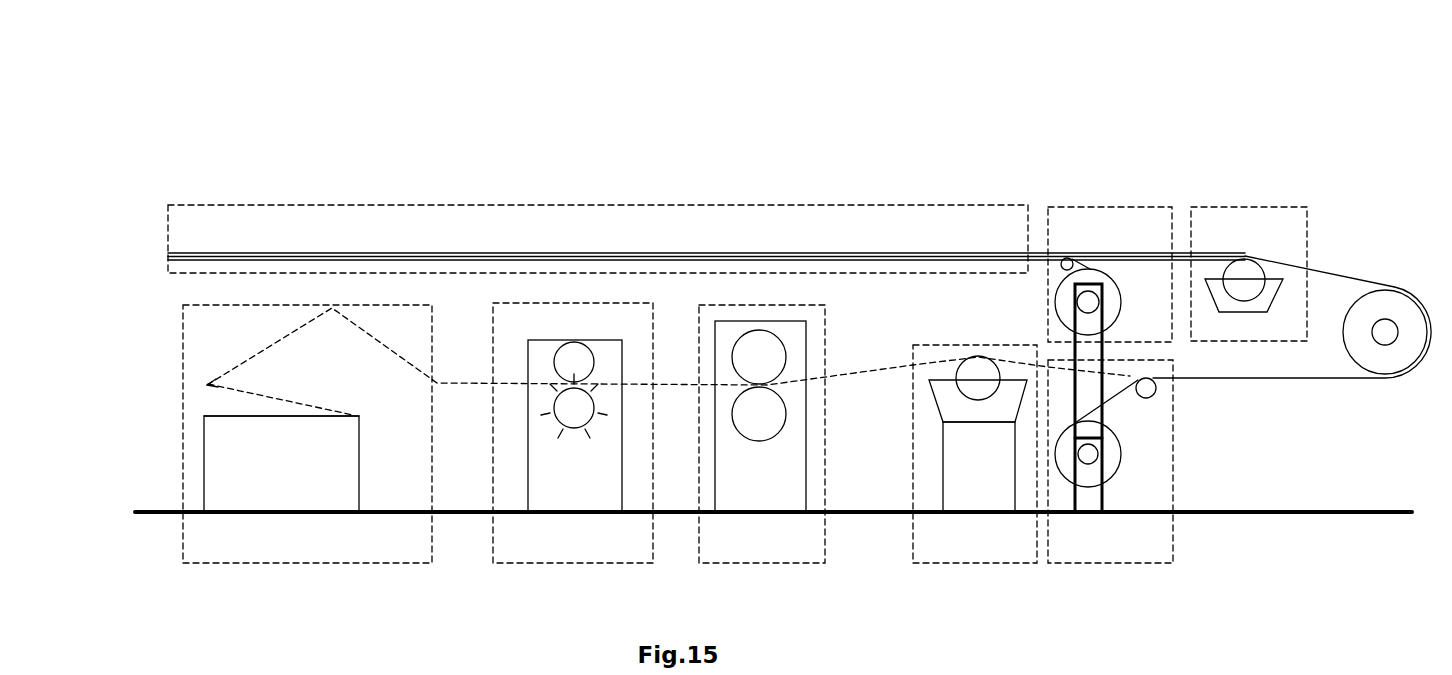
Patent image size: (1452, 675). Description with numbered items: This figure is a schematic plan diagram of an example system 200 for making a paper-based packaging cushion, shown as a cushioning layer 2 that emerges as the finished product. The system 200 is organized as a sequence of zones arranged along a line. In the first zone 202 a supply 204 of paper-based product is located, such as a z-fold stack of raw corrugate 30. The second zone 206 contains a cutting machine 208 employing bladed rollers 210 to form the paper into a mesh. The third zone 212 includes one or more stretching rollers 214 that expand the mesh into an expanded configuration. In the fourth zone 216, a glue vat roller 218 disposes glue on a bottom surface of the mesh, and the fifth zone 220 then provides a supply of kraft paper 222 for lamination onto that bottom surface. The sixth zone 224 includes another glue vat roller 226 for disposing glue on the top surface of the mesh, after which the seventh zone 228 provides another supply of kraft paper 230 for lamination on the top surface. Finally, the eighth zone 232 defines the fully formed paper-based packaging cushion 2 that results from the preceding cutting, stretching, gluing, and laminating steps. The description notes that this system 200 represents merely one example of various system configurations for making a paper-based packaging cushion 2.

The system 200 is at (325, 108).
The cushioning layer 2 is at (735, 253).
The raw corrugate 30 is at (290, 471).
The first zone 202 is at (307, 434).
The supply 204 is at (342, 456).
The second zone 206 is at (573, 433).
The cutting machine 208 is at (550, 490).
The bladed rollers 210 is at (567, 410).
The third zone 212 is at (762, 434).
The stretching rollers 214 is at (772, 349).
The fourth zone 216 is at (975, 454).
The glue vat roller 218 is at (978, 388).
The fifth zone 220 is at (1110, 423).
The supply of kraft paper 222 is at (1113, 455).
The sixth zone 224 is at (1249, 274).
The glue vat roller 226 is at (1242, 303).
The seventh zone 228 is at (1110, 274).
The supply of kraft paper 230 is at (1065, 302).
The eighth zone 232 is at (598, 239).